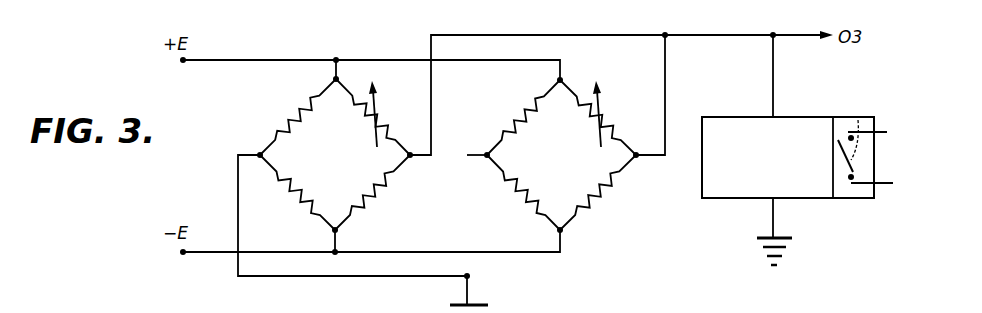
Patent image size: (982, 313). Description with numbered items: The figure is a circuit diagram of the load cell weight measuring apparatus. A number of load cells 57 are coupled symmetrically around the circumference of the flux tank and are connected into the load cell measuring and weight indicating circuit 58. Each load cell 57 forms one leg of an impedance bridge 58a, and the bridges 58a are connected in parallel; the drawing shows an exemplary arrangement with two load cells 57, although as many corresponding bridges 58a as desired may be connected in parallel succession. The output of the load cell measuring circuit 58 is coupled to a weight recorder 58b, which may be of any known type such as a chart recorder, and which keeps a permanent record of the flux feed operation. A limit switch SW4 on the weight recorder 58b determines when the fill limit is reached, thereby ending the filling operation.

The load cell measuring and weight indicating circuit 58 is at (367, 47).
The impedance bridge 58a is at (354, 170).
The load cell 57 is at (379, 113).
The weight recorder 58b is at (724, 199).
The limit switch SW4 is at (858, 120).